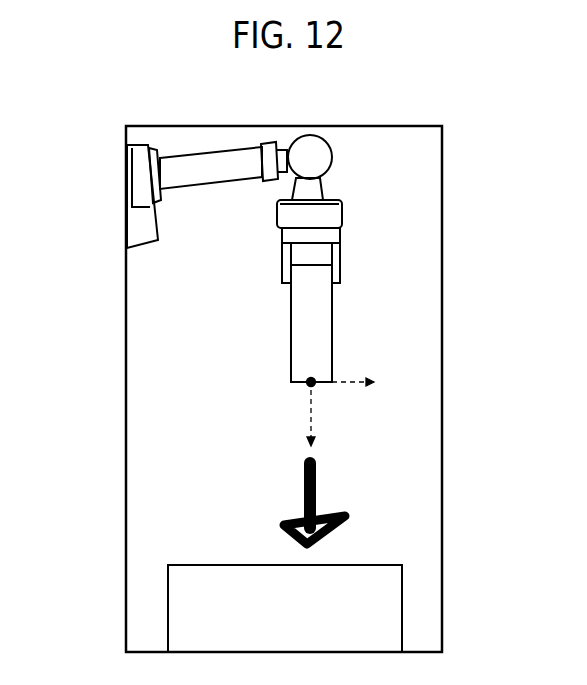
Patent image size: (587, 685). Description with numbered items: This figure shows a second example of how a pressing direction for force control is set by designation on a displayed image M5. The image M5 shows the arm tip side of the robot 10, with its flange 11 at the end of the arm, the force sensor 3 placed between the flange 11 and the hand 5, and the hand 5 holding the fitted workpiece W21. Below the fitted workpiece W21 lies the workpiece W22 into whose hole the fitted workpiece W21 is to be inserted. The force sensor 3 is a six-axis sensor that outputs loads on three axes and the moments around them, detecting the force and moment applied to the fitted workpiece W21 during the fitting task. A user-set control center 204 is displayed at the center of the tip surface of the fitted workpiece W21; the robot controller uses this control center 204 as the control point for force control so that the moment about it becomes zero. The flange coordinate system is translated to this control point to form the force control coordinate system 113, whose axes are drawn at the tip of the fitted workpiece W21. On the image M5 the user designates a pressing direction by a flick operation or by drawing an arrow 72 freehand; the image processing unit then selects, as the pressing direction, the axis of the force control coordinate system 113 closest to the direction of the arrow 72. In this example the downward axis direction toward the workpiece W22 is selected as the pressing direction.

The robot 10 is at (229, 143).
The image M5 is at (393, 126).
The flange 11 is at (340, 197).
The force sensor 3 is at (342, 217).
The hand 5 is at (340, 257).
The fitted workpiece W21 is at (332, 323).
The control center 204 is at (309, 386).
The force control coordinate system 113 is at (356, 393).
The arrow 72 is at (318, 500).
The workpiece W22 is at (402, 618).